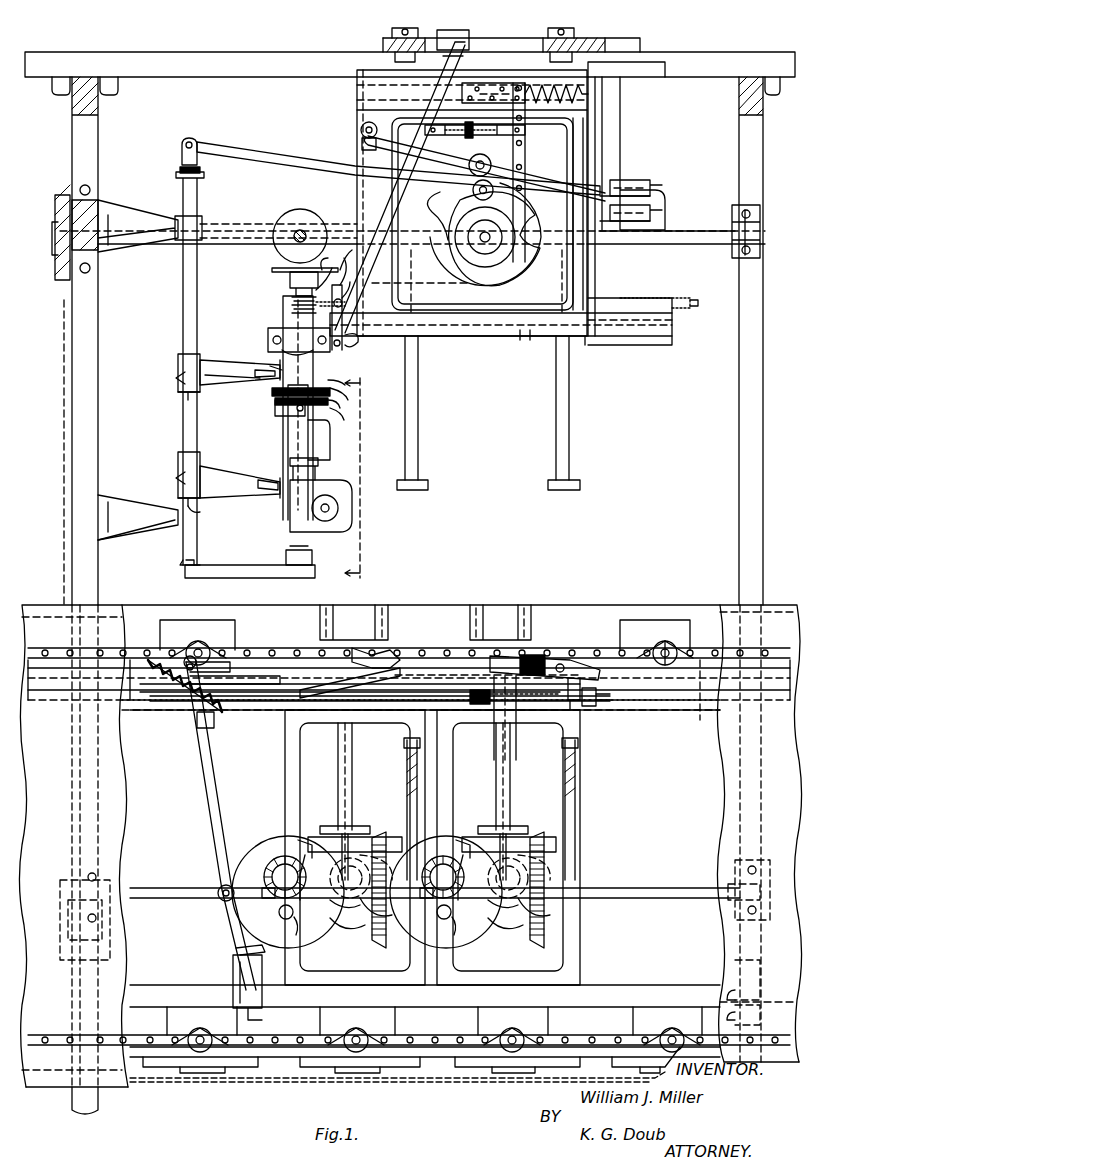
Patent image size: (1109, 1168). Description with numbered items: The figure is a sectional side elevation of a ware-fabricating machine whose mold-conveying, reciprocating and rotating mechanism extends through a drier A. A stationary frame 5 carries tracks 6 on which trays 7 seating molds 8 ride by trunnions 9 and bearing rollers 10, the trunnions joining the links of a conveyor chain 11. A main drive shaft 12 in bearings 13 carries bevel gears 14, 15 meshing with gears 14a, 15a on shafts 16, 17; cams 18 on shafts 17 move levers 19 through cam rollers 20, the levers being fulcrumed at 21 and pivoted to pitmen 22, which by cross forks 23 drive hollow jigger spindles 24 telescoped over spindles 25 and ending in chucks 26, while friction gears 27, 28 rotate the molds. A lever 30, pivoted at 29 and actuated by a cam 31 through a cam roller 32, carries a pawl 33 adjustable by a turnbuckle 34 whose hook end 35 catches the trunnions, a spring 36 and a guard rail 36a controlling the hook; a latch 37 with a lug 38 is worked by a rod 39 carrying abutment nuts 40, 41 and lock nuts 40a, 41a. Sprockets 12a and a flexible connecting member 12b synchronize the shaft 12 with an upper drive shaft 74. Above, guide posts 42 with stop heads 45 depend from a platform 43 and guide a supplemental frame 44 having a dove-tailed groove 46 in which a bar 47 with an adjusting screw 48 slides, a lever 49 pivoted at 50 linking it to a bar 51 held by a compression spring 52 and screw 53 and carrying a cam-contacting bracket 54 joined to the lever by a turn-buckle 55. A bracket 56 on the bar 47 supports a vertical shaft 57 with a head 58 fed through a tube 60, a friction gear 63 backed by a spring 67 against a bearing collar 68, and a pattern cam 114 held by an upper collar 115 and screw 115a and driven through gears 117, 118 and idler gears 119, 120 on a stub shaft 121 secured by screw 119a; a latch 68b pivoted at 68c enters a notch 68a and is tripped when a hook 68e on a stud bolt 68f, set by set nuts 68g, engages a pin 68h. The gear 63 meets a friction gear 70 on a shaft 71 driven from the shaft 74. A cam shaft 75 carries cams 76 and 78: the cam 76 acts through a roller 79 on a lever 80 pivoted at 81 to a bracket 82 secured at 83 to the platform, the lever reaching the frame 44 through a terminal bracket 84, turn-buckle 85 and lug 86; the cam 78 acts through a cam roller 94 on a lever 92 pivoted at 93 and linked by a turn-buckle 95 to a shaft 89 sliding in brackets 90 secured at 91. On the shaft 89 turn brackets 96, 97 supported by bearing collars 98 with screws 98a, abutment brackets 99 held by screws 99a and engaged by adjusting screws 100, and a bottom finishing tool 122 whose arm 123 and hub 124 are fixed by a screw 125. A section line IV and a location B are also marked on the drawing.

The upright post 5 is at (99, 336).
The rail 6 is at (686, 692).
The rail 7 is at (421, 690).
The bracket 8 is at (386, 606).
The sprocket 9 is at (655, 658).
The sprocket shaft 10 is at (670, 655).
The conveyor chain 11 is at (600, 648).
The shaft 12 is at (660, 898).
The bearing plate 12a is at (55, 208).
The bearing 12b is at (64, 388).
The bearing bracket 13 is at (751, 942).
The worm 14 is at (384, 938).
The worm shaft 14a is at (356, 935).
The gear 15 is at (316, 930).
The gear hub 15a is at (268, 888).
The gear 16 is at (340, 876).
The worm wheel 17 is at (282, 860).
The pinion 18 is at (279, 913).
The gear 19 is at (392, 898).
The pinion 20 is at (292, 922).
The gear 21 is at (336, 925).
The gear housing 22 is at (410, 820).
The vertical rod 23 is at (393, 796).
The post 24 is at (338, 773).
The stem 25 is at (342, 822).
The connecting rod 26 is at (470, 684).
The plate 27 is at (374, 848).
The gear 28 is at (384, 864).
The pivot block 29 is at (240, 992).
The lever 30 is at (210, 810).
The wheel 31 is at (262, 842).
The pivot 32 is at (218, 888).
The clevis 33 is at (224, 672).
The link 34 is at (270, 688).
The cam 35 is at (364, 650).
The chain 36 is at (180, 706).
The link bar 36a is at (432, 648).
The lever 37 is at (566, 654).
The slide 38 is at (568, 700).
The rod 39 is at (425, 690).
The block 40 is at (592, 706).
The stop 40a is at (610, 698).
The post 41 is at (494, 705).
The collar 41a is at (470, 696).
The leg 42 is at (418, 426).
The cross member 43 is at (503, 50).
The frame 44 is at (587, 276).
The foot 45 is at (412, 490).
The frame bar 46 is at (518, 338).
The bracket 47 is at (612, 345).
The screw 48 is at (698, 303).
The cam follower 49 is at (440, 196).
The rod 50 is at (463, 66).
The housing 51 is at (357, 97).
The spring 52 is at (532, 83).
The strip 53 is at (592, 108).
The slide bar 54 is at (526, 130).
The block 55 is at (478, 138).
The column 56 is at (283, 322).
The collar 57 is at (320, 468).
The housing 58 is at (326, 483).
The block 60 is at (268, 352).
The plate 63 is at (272, 270).
The nut 67 is at (292, 285).
The lever 68 is at (258, 295).
The lever arm 68a is at (290, 300).
The pivot 68b is at (339, 310).
The roller 68c is at (358, 345).
The arm 68e is at (309, 257).
The arm 68f is at (353, 271).
The arm 68g is at (343, 258).
The arm 68h is at (355, 290).
The disc 70 is at (290, 218).
The shaft 71 is at (304, 228).
The shaft 74 is at (694, 245).
The hub 75 is at (478, 250).
The cam 76 is at (532, 278).
The cam disc 78 is at (490, 266).
The roller 79 is at (469, 166).
The arm 80 is at (538, 176).
The clamp 81 is at (628, 178).
The hanger plate 82 is at (622, 100).
The bracket 83 is at (640, 72).
The frame 84 is at (360, 146).
The shaft 85 is at (372, 222).
The line 86 is at (440, 283).
The rod 89 is at (183, 285).
The bracket 90 is at (128, 210).
The bracket arm 91 is at (118, 245).
The rod 92 is at (246, 150).
The clamp 93 is at (615, 233).
The roller 94 is at (475, 195).
The clevis 95 is at (180, 168).
The arm end 96 is at (222, 384).
The arm 97 is at (208, 360).
The pin 98 is at (184, 398).
The pin 98a is at (198, 508).
The pin 99 is at (180, 386).
The block 99a is at (178, 372).
The link 100 is at (250, 416).
The housing 114 is at (330, 440).
The shaft 115 is at (312, 412).
The collar 115a is at (280, 416).
The gear 117 is at (275, 402).
The gear 118 is at (272, 392).
The arm 119 is at (358, 396).
The arm 119a is at (350, 384).
The arm 120 is at (346, 416).
The arm 121 is at (368, 398).
The block 122 is at (318, 558).
The plate 123 is at (250, 578).
The stub 124 is at (183, 567).
The stub 125 is at (186, 563).
The frame A is at (662, 606).
The roller B is at (338, 510).
The section line IV is at (362, 477).